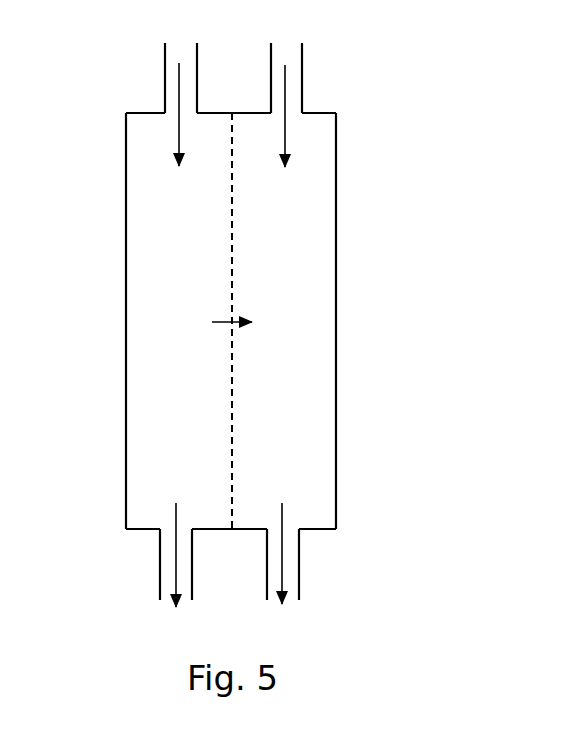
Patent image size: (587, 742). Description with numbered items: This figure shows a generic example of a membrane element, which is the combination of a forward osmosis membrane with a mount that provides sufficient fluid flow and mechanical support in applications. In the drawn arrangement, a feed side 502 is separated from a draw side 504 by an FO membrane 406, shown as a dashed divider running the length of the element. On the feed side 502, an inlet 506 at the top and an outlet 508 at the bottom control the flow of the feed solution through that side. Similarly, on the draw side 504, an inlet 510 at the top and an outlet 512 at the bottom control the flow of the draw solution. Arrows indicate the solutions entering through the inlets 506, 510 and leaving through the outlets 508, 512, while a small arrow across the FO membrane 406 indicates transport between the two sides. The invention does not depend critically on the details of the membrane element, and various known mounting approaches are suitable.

The FO membrane 406 is at (232, 206).
The feed side 502 is at (147, 325).
The draw side 504 is at (316, 335).
The inlet 506 is at (165, 79).
The outlet 508 is at (160, 570).
The inlet 510 is at (302, 73).
The outlet 512 is at (299, 569).